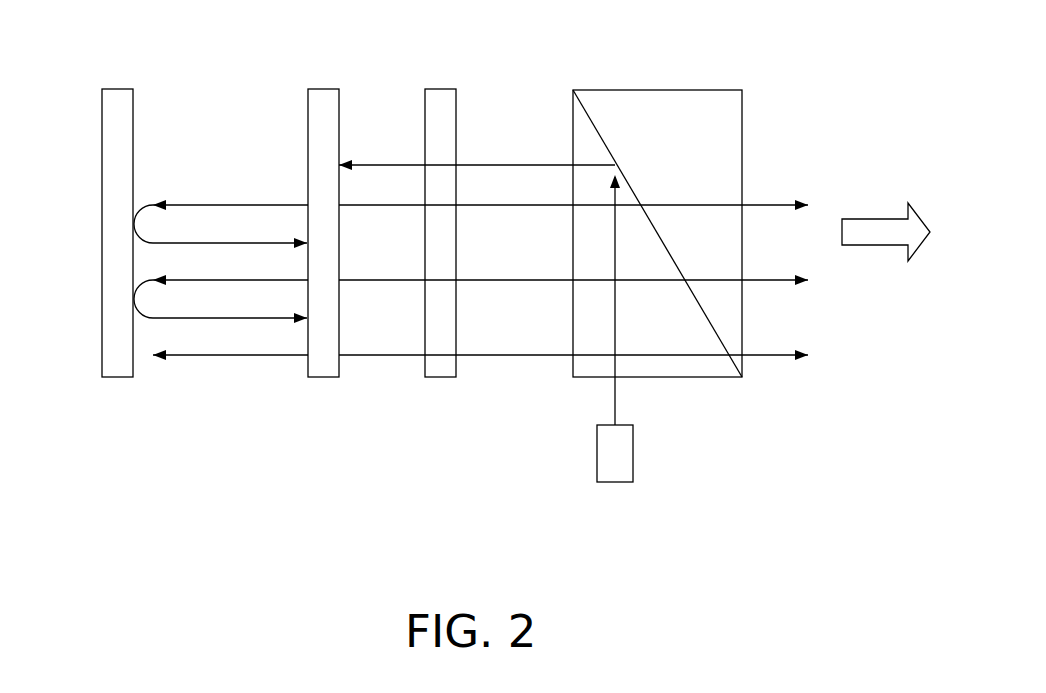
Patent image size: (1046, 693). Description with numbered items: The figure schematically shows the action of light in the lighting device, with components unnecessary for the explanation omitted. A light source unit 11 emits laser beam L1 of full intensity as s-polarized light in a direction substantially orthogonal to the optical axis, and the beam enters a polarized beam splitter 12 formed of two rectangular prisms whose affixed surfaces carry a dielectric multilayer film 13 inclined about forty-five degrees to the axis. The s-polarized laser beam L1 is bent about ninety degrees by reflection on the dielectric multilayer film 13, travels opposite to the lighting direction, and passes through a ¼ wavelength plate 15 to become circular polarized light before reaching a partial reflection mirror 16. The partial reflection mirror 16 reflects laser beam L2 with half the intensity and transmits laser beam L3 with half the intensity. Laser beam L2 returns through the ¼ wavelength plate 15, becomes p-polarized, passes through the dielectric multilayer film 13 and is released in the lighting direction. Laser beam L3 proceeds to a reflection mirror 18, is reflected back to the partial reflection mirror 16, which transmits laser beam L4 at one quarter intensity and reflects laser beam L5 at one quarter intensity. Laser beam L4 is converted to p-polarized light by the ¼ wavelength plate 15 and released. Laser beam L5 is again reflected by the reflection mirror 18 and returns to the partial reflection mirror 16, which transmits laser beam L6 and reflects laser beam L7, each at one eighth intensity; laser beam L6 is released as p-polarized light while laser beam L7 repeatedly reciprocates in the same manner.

The light source unit 11 is at (622, 483).
The polarized beam splitter 12 is at (714, 92).
The dielectric multilayer film 13 is at (580, 95).
The ¼ wavelength plate 15 is at (440, 88).
The partial reflection mirror 16 is at (322, 88).
The reflection mirror 18 is at (117, 88).
The laser beam L1 is at (617, 405).
The laser beam L2 is at (535, 207).
The laser beam L3 is at (237, 203).
The laser beam L4 is at (535, 282).
The laser beam L5 is at (190, 280).
The laser beam L6 is at (535, 357).
The laser beam L7 is at (240, 357).